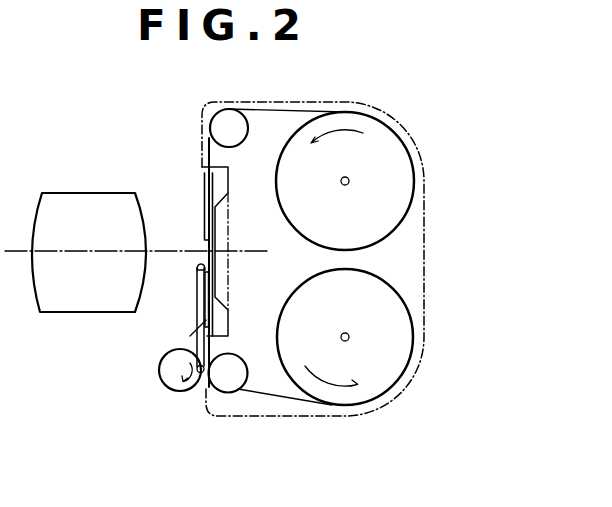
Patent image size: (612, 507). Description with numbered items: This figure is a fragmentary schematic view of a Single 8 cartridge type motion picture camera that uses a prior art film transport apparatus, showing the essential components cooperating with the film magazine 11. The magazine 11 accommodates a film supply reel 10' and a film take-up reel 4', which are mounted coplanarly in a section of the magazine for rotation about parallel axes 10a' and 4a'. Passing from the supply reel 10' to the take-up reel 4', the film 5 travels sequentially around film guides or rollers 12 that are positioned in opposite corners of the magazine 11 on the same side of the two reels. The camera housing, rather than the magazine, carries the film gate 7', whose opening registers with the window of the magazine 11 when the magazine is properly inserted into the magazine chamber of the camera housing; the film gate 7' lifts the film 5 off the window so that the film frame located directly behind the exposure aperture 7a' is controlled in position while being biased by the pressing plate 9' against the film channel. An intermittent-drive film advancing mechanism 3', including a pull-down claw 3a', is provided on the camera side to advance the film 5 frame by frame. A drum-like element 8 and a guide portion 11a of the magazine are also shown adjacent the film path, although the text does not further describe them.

The intermittent-drive film advancing mechanism 3' is at (155, 370).
The pull-down claw 3a' is at (177, 304).
The film take-up spool or reel 4' is at (348, 337).
The axis of take-up reel 4a' is at (362, 318).
The film 5 is at (202, 245).
The film gate 7' is at (230, 320).
The exposure aperture 7a' is at (176, 265).
The drum 8 is at (81, 199).
The pressing plate 9' is at (232, 251).
The film supply spool or reel 10' is at (346, 179).
The axis of supply reel 10a' is at (362, 203).
The film magazine 11 is at (424, 250).
The housing guide wall 11a is at (220, 179).
The film guides or rollers 12 is at (228, 122).